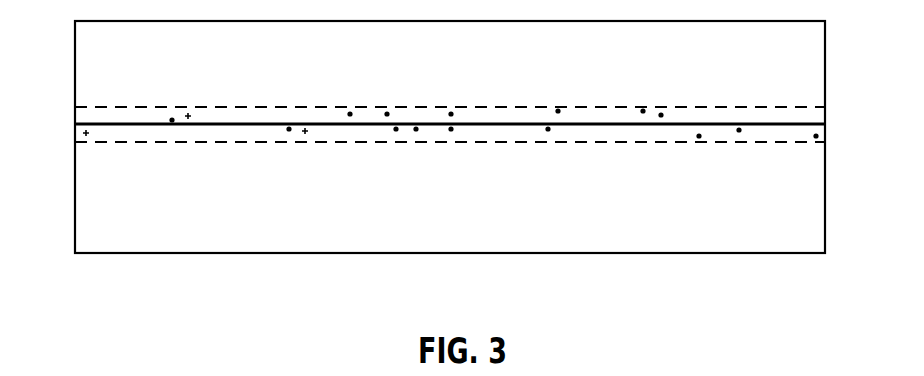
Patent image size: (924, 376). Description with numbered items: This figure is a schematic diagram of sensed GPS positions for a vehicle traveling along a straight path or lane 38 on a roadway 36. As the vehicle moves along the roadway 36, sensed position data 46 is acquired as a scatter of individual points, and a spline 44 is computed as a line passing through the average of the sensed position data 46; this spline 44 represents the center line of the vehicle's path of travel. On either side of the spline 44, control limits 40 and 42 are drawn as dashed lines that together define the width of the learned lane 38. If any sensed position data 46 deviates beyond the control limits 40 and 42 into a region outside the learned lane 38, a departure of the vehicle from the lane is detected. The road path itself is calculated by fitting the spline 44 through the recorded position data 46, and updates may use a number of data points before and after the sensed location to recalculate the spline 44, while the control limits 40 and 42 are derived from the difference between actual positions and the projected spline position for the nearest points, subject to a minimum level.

The roadway 36 is at (103, 91).
The lane 38 is at (456, 105).
The control limit 40 is at (782, 107).
The control limit 42 is at (783, 143).
The spline 44 is at (807, 123).
The sensed position data 46 is at (188, 119).